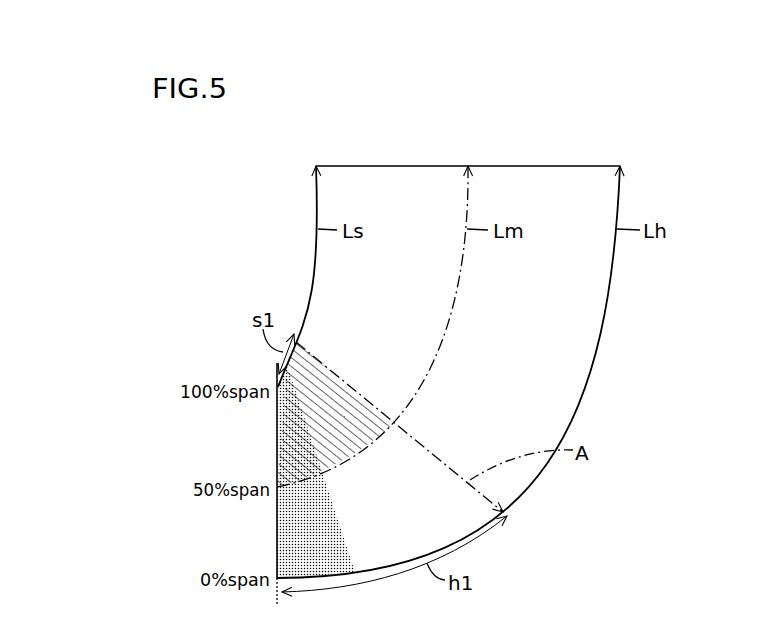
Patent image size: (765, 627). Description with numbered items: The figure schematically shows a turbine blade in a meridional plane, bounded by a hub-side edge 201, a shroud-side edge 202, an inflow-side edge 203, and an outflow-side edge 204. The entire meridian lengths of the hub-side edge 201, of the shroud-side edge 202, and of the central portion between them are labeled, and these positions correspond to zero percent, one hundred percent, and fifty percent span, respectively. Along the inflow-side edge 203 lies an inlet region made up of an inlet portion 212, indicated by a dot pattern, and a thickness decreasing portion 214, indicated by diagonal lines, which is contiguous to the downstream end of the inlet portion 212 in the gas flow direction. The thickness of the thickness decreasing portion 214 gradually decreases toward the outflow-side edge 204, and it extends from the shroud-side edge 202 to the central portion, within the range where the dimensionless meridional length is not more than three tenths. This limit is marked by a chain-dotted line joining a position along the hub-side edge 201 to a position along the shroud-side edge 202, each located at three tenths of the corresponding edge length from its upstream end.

The hub-side edge 201 is at (603, 325).
The shroud-side edge 202 is at (313, 195).
The inflow-side edge 203 is at (277, 461).
The outflow-side edge 204 is at (377, 164).
The inlet portion 212 is at (293, 548).
The thickness decreasing portion 214 is at (337, 427).